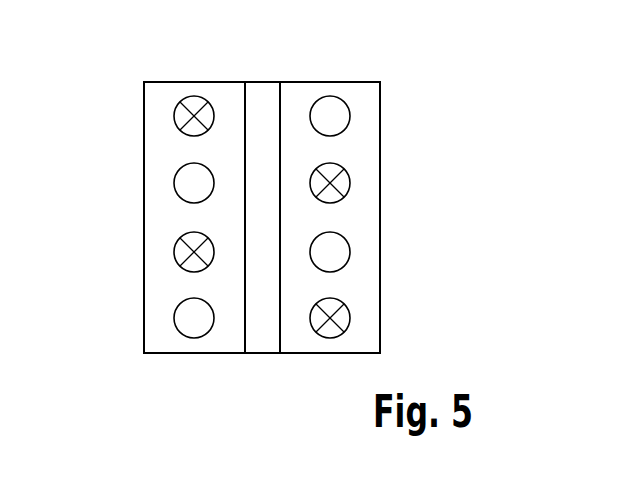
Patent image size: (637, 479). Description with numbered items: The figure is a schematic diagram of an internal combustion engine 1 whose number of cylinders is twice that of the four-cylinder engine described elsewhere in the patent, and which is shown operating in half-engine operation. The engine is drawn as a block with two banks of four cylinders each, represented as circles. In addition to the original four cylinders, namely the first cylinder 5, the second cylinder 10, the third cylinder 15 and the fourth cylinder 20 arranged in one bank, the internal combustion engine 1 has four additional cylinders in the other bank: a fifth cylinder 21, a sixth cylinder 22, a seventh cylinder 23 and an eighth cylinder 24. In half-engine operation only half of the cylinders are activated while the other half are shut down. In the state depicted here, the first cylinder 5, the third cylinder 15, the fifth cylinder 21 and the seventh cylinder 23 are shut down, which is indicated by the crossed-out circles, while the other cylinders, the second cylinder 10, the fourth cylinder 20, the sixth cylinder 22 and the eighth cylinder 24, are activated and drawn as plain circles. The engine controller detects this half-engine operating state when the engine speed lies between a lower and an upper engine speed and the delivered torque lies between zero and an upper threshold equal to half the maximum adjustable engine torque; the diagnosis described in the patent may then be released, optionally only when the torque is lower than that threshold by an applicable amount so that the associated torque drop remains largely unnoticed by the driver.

The internal combustion engine 1 is at (441, 61).
The first cylinder 5 is at (174, 116).
The second cylinder 10 is at (174, 184).
The third cylinder 15 is at (174, 253).
The fourth cylinder 20 is at (174, 319).
The fifth cylinder 21 is at (350, 316).
The sixth cylinder 22 is at (350, 248).
The seventh cylinder 23 is at (350, 177).
The eighth cylinder 24 is at (350, 110).